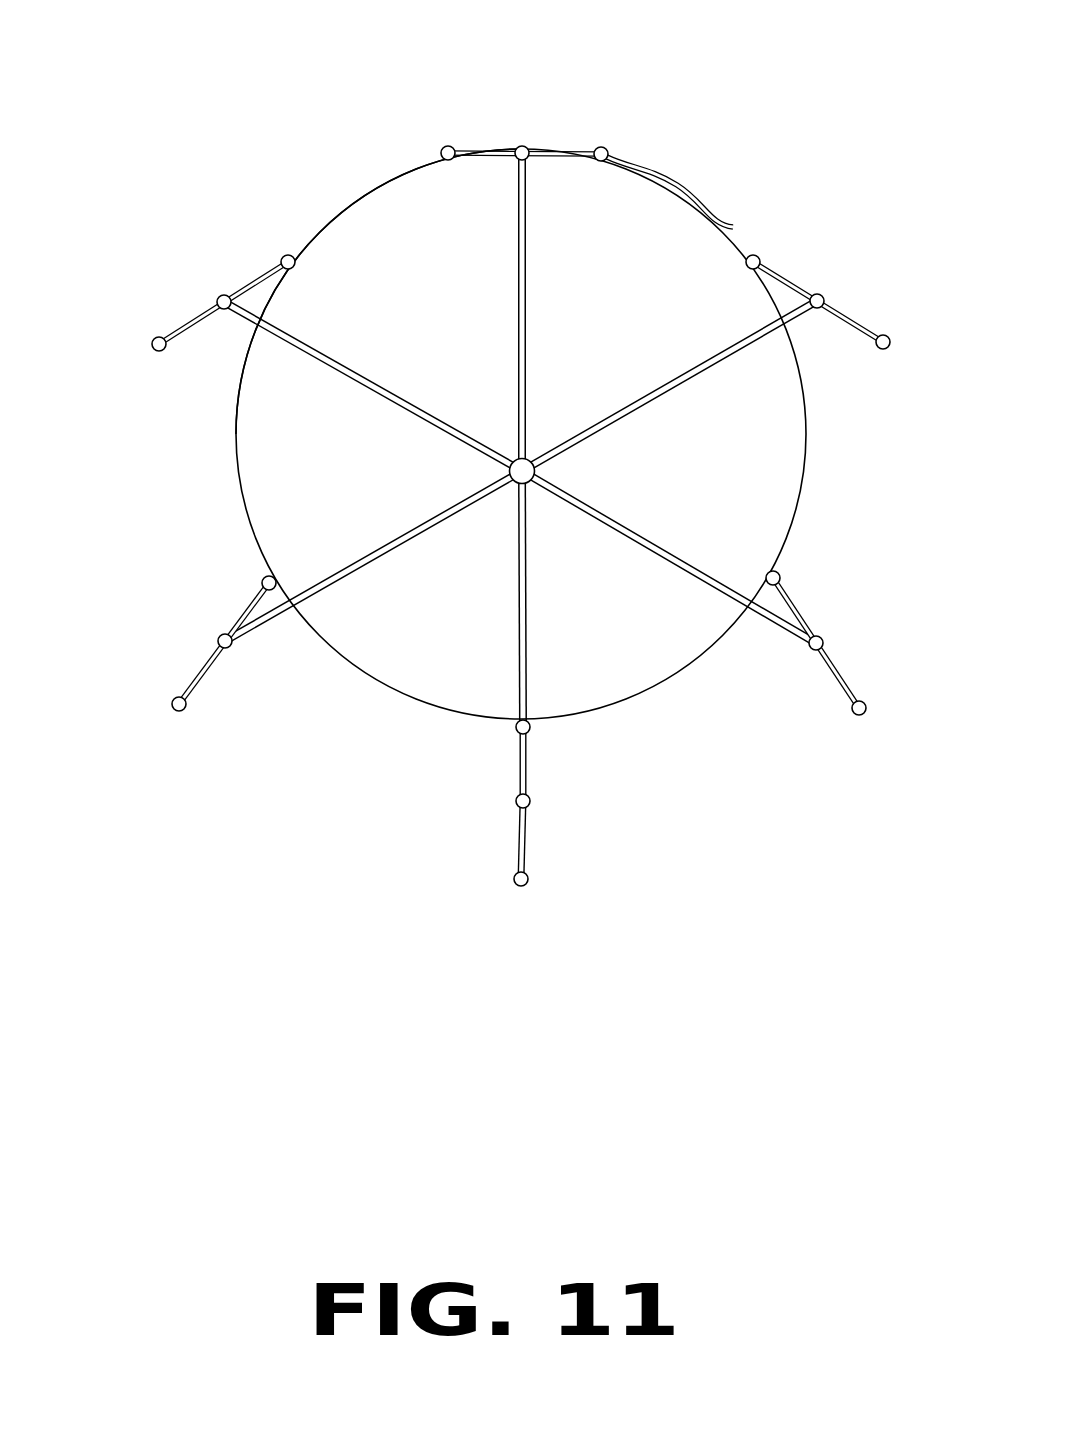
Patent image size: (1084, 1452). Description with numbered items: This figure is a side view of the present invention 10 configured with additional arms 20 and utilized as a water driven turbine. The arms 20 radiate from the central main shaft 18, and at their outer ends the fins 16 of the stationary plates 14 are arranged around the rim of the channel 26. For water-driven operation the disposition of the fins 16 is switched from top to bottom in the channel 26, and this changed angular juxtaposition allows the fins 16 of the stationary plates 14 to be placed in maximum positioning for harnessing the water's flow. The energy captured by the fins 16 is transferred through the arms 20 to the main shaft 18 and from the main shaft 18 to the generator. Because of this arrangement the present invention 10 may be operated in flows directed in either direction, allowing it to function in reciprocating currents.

The present invention 10 is at (772, 98).
The stationary plates 14 is at (805, 443).
The fins 16 is at (202, 312).
The main shaft 18 is at (517, 459).
The arms 20 is at (521, 297).
The channel 26 is at (385, 187).